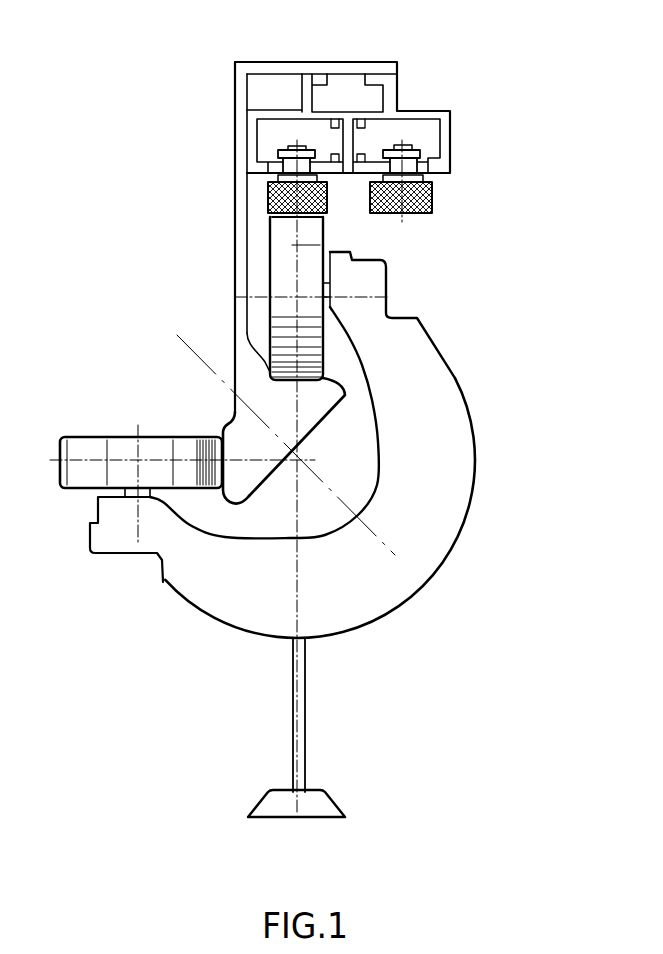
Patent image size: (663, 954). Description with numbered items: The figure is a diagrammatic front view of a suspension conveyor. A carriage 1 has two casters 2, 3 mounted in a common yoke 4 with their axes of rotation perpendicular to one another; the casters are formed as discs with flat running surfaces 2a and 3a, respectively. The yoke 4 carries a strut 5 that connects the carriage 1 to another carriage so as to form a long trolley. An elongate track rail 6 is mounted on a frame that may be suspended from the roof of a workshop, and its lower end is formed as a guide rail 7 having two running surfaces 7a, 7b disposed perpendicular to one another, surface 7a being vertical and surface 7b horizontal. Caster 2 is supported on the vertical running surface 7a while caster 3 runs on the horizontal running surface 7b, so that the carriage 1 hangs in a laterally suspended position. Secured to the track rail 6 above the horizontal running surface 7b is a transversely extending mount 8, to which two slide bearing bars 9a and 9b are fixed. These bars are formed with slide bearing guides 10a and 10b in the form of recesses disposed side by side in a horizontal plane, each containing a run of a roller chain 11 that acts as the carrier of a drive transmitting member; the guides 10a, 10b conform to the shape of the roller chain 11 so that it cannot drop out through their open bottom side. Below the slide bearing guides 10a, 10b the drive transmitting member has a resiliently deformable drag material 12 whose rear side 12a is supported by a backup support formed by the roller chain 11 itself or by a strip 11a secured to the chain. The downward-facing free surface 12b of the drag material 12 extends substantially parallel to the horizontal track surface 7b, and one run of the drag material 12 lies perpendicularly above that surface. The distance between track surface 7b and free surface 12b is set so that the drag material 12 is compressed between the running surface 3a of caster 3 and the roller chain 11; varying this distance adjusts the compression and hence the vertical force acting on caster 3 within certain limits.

The carriage 1 is at (214, 647).
The caster 2 is at (185, 455).
The running surface 2a is at (87, 462).
The caster 3 is at (287, 327).
The running surface 3a is at (296, 237).
The yoke 4 is at (250, 565).
The strut 5 is at (317, 805).
The track rail 6 is at (235, 88).
The guide rail 7 is at (280, 427).
The running surface 7a is at (213, 498).
The running surface 7b is at (332, 368).
The mount 8 is at (398, 111).
The slide bearing bar 9a is at (268, 135).
The slide bearing bar 9b is at (424, 130).
The slide bearing guide 10a is at (300, 163).
The slide bearing guide 10b is at (405, 149).
The roller chain 11 is at (268, 165).
The strip 11a is at (317, 178).
The drag material 12 is at (327, 205).
The rear side 12a is at (327, 193).
The free surface 12b is at (323, 231).